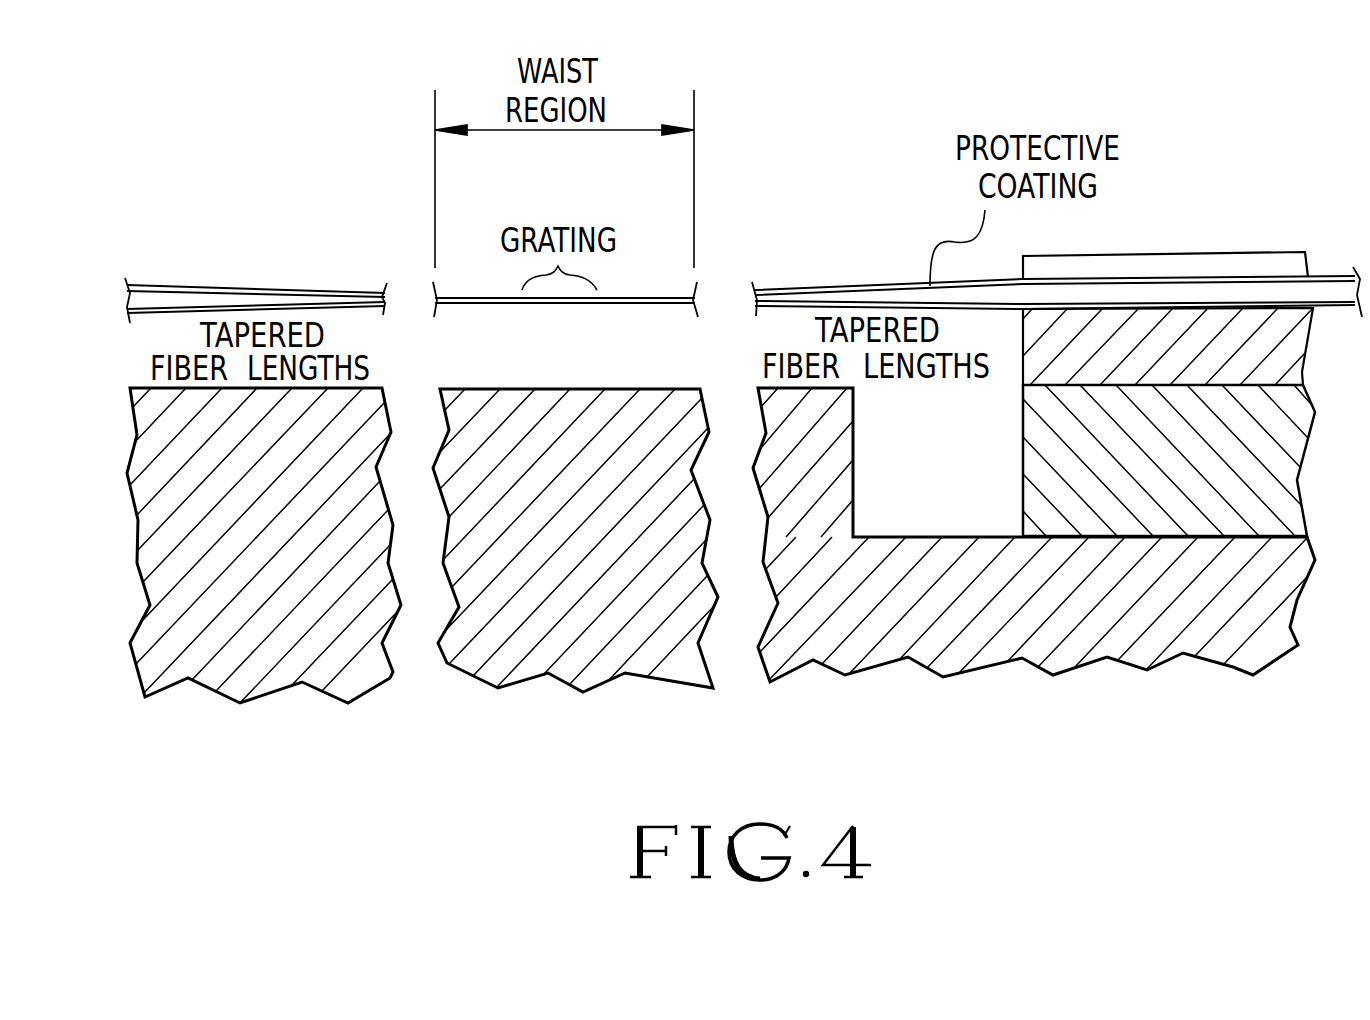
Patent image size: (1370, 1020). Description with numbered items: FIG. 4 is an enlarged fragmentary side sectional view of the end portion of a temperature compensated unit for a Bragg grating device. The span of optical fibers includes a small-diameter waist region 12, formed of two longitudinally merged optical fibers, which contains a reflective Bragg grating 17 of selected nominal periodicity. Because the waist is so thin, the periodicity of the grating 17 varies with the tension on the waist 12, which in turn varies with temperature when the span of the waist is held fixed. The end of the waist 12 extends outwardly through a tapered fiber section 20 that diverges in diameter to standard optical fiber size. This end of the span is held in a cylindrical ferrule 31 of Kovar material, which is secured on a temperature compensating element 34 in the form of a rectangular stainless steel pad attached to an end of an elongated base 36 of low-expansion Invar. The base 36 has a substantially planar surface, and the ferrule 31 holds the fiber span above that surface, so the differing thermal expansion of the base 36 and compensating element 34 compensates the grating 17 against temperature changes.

The waist region 12 is at (662, 305).
The reflective Bragg grating 17 is at (565, 305).
The tapered fiber section 20 is at (860, 289).
The cylindrical ferrule 31 is at (1205, 323).
The temperature compensating element 34 is at (1056, 462).
The elongated base 36 is at (935, 642).